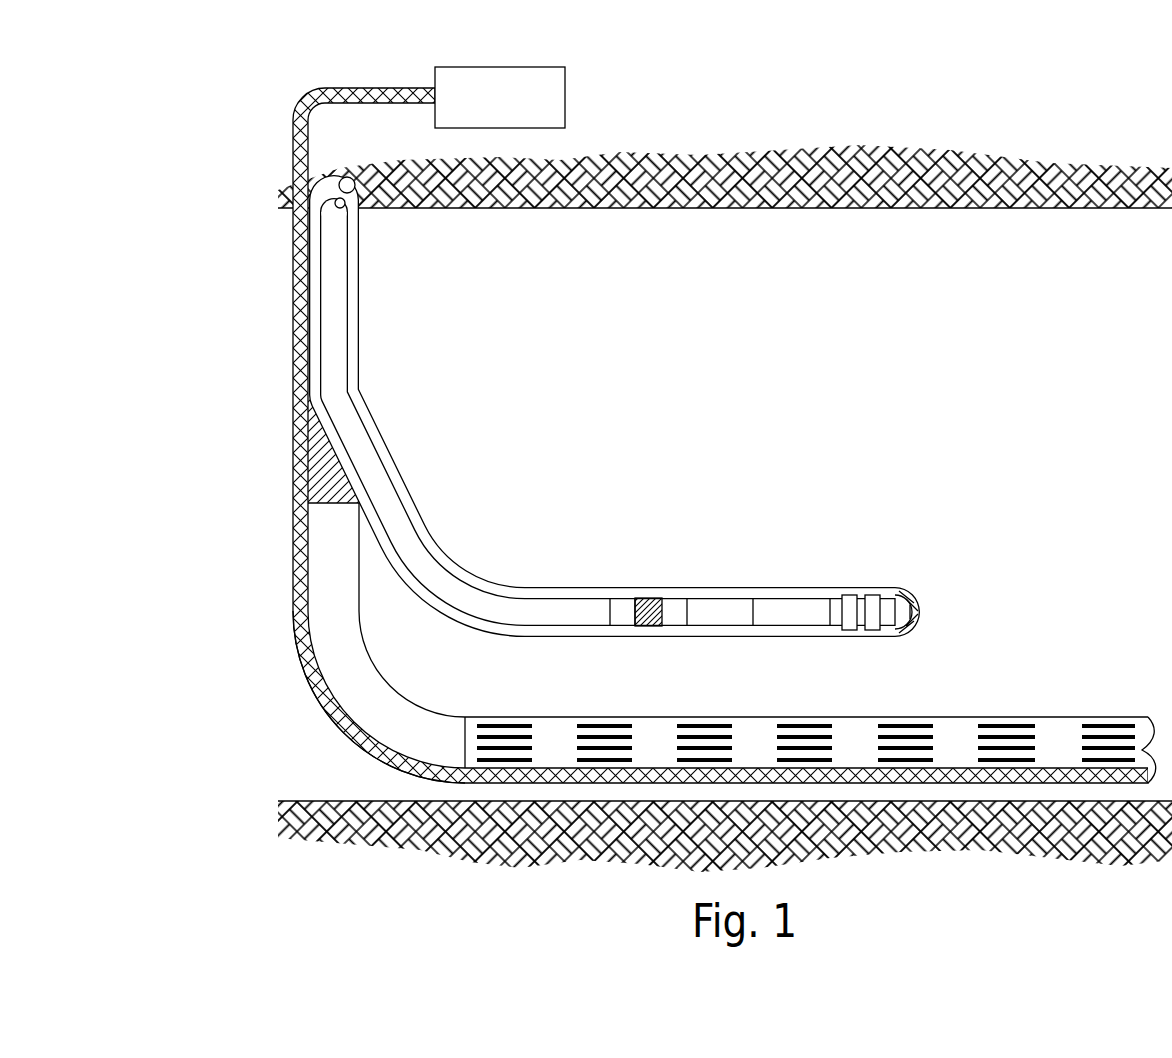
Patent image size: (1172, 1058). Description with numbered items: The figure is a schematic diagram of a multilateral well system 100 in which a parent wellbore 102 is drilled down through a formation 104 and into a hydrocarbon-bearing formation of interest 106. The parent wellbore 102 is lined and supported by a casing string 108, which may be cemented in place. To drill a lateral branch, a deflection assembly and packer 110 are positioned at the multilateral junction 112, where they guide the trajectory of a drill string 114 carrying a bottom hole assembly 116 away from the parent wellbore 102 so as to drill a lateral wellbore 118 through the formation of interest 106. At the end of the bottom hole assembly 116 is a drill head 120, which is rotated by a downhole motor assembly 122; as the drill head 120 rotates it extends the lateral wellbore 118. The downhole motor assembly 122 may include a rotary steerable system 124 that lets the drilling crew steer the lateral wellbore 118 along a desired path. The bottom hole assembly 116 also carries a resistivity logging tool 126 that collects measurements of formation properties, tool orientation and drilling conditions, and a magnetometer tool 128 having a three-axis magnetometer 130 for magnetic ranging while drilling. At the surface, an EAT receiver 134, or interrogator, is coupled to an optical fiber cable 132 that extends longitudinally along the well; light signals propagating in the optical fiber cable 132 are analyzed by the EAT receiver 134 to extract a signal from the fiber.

The multilateral well system 100 is at (230, 66).
The parent wellbore 102 is at (692, 491).
The formation 104 is at (603, 212).
The formation of interest 106 is at (932, 368).
The casing string 108 is at (293, 276).
The deflection assembly and packer 110 is at (316, 470).
The multilateral junction 112 is at (308, 393).
The drill string 114 is at (340, 350).
The bottom hole assembly 116 is at (781, 606).
The lateral wellbore 118 is at (412, 483).
The drill head 120 is at (905, 612).
The downhole motor assembly 122 is at (788, 628).
The rotary steerable system 124 is at (862, 637).
The resistivity logging tool 126 is at (727, 628).
The magnetometer tool 128 is at (618, 630).
The 3-axis magnetometer 130 is at (652, 626).
The optical fiber cable 132 is at (352, 738).
The EAT receiver 134 is at (565, 97).